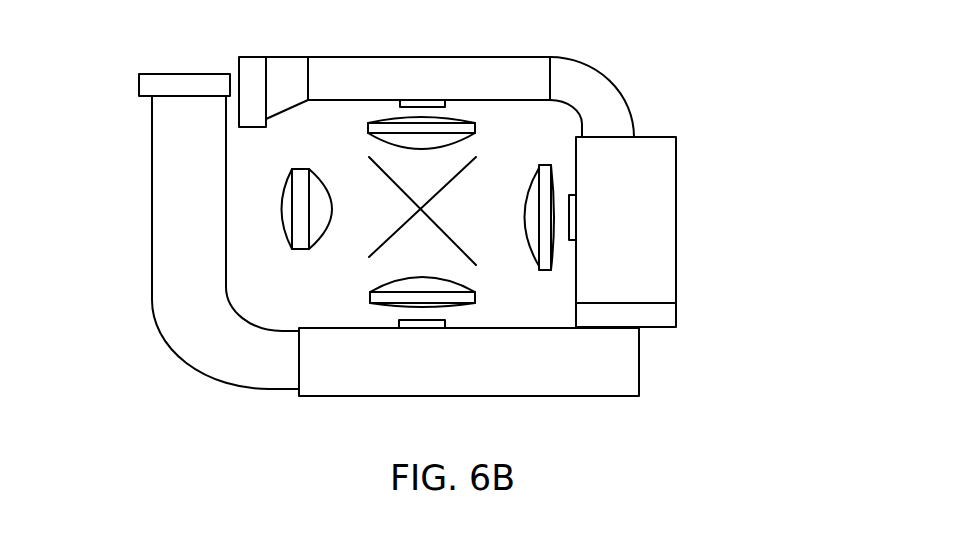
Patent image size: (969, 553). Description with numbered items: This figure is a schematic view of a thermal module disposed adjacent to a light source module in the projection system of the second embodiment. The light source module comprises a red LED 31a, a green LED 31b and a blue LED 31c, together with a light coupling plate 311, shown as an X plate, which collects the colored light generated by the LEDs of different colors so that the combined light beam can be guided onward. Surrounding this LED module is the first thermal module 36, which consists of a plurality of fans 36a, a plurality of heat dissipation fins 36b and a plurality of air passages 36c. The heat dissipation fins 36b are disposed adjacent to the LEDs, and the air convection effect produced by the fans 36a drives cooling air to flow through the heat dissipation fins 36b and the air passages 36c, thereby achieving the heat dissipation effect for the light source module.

The first thermal module 36 is at (788, 100).
The fans 36a is at (159, 86).
The heat dissipation fins 36b is at (473, 82).
The air passages 36c is at (185, 298).
The red LED 31a is at (444, 107).
The green LED 31b is at (572, 235).
The blue LED 31c is at (445, 325).
The light coupling plate 311 is at (375, 257).